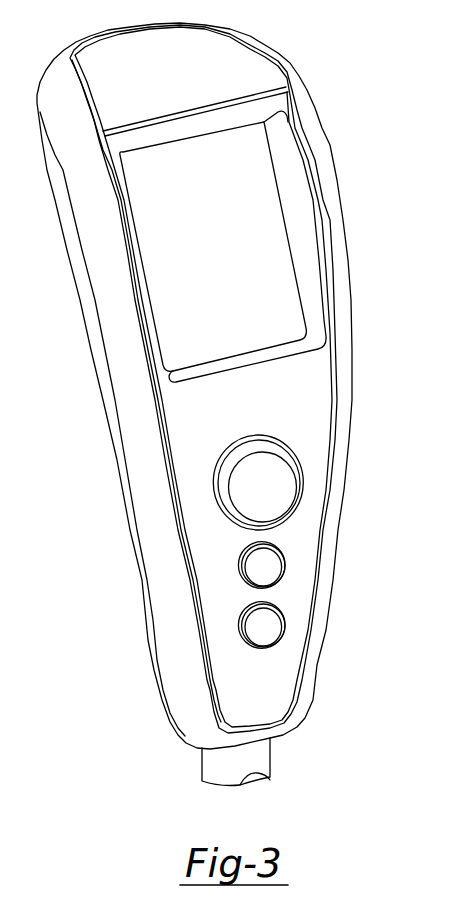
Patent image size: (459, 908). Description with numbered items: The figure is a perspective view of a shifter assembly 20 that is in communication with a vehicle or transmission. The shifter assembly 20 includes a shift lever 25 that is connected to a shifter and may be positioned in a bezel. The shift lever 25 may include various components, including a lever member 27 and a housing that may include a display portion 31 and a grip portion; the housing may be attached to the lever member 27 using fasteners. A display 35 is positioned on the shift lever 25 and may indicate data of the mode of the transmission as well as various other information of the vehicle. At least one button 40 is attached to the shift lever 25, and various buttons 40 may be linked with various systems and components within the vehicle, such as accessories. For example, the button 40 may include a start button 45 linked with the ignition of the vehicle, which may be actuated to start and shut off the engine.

The shifter assembly 20 is at (335, 133).
The shift lever 25 is at (284, 748).
The lever member 27 is at (121, 477).
The display portion 31 is at (396, 382).
The display 35 is at (397, 215).
The button 40 is at (272, 625).
The start button 45 is at (396, 475).